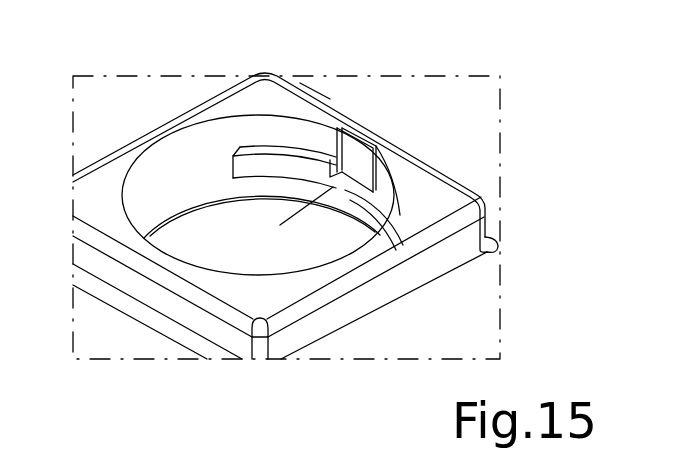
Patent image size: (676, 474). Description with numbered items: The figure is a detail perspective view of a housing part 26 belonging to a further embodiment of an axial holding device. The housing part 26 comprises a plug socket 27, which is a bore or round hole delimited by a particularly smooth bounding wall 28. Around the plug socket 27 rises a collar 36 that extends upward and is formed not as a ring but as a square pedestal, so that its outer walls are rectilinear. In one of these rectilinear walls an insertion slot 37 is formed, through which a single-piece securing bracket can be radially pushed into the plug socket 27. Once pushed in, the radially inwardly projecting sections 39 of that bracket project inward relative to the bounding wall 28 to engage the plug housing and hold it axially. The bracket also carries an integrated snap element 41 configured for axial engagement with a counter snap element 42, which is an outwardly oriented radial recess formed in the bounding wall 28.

The housing part 26 is at (431, 135).
The plug socket 27 is at (195, 173).
The bounding wall 28 is at (150, 168).
The collar 36 is at (291, 86).
The insertion slot 37 is at (313, 147).
The radially inwardly projecting sections 39 is at (265, 165).
The snap element 41 is at (307, 196).
The counter snap element 42 is at (350, 172).